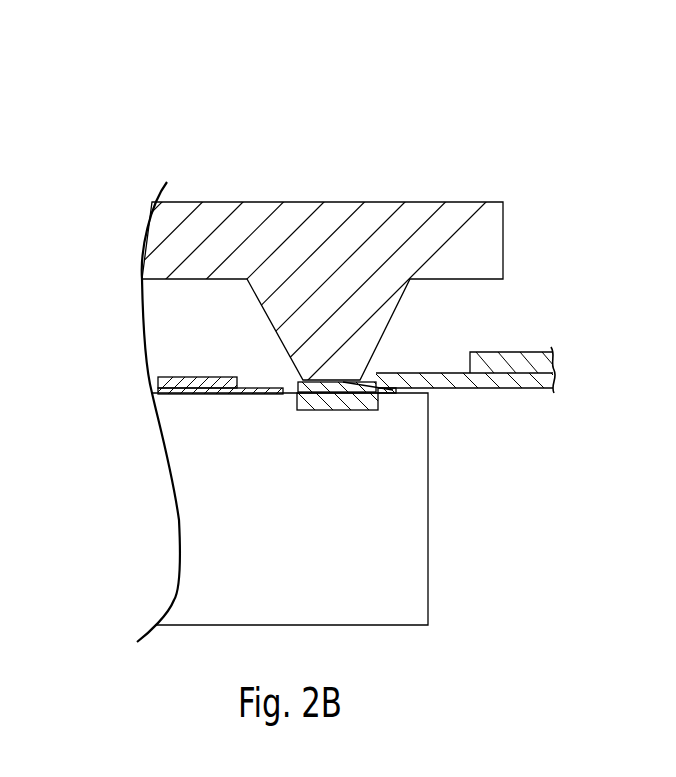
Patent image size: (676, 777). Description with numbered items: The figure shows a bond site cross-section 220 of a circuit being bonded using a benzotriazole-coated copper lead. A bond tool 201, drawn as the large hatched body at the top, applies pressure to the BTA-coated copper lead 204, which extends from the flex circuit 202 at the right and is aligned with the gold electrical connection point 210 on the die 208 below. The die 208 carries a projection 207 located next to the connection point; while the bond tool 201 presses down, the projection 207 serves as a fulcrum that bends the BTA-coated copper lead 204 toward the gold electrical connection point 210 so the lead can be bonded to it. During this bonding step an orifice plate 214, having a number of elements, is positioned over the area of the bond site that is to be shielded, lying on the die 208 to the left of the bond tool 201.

The bond site cross-section 220 is at (117, 112).
The bond tool 201 is at (290, 201).
The flex circuit 202 is at (528, 348).
The BTA-coated copper lead 204 is at (345, 383).
The projection 207 is at (394, 405).
The die 208 is at (429, 490).
The gold electrical connection point 210 is at (331, 416).
The orifice plate 214 is at (180, 377).